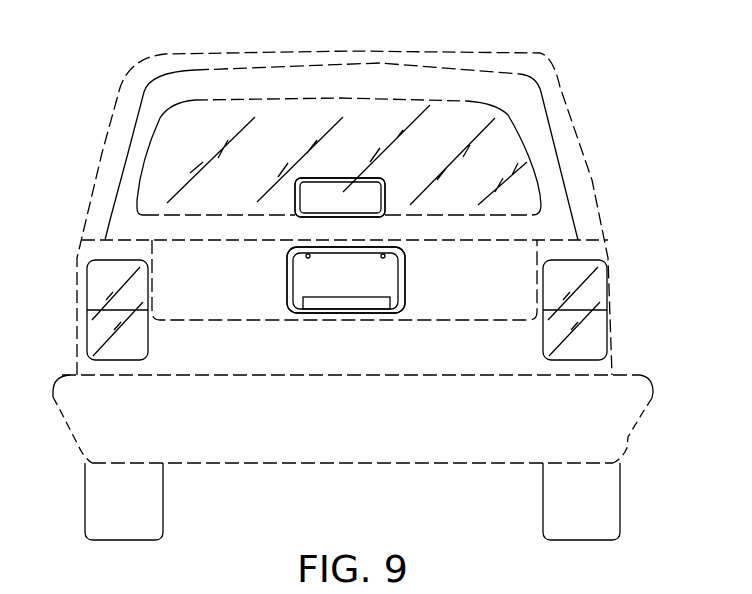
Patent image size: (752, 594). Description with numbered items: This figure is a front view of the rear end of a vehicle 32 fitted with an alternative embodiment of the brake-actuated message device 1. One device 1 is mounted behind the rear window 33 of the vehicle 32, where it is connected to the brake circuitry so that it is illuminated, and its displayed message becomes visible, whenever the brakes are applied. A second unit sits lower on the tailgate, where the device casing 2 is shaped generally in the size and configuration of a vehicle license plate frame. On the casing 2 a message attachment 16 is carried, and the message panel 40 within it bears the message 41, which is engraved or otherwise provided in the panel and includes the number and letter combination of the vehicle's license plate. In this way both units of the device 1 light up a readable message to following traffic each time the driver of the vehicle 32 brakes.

The brake-actuated message device 1 is at (296, 164).
The device casing 2 is at (290, 208).
The message attachment 16 is at (418, 278).
The vehicle 32 is at (566, 92).
The rear window 33 is at (521, 194).
The message panel 40 is at (388, 296).
The message 41 is at (390, 282).